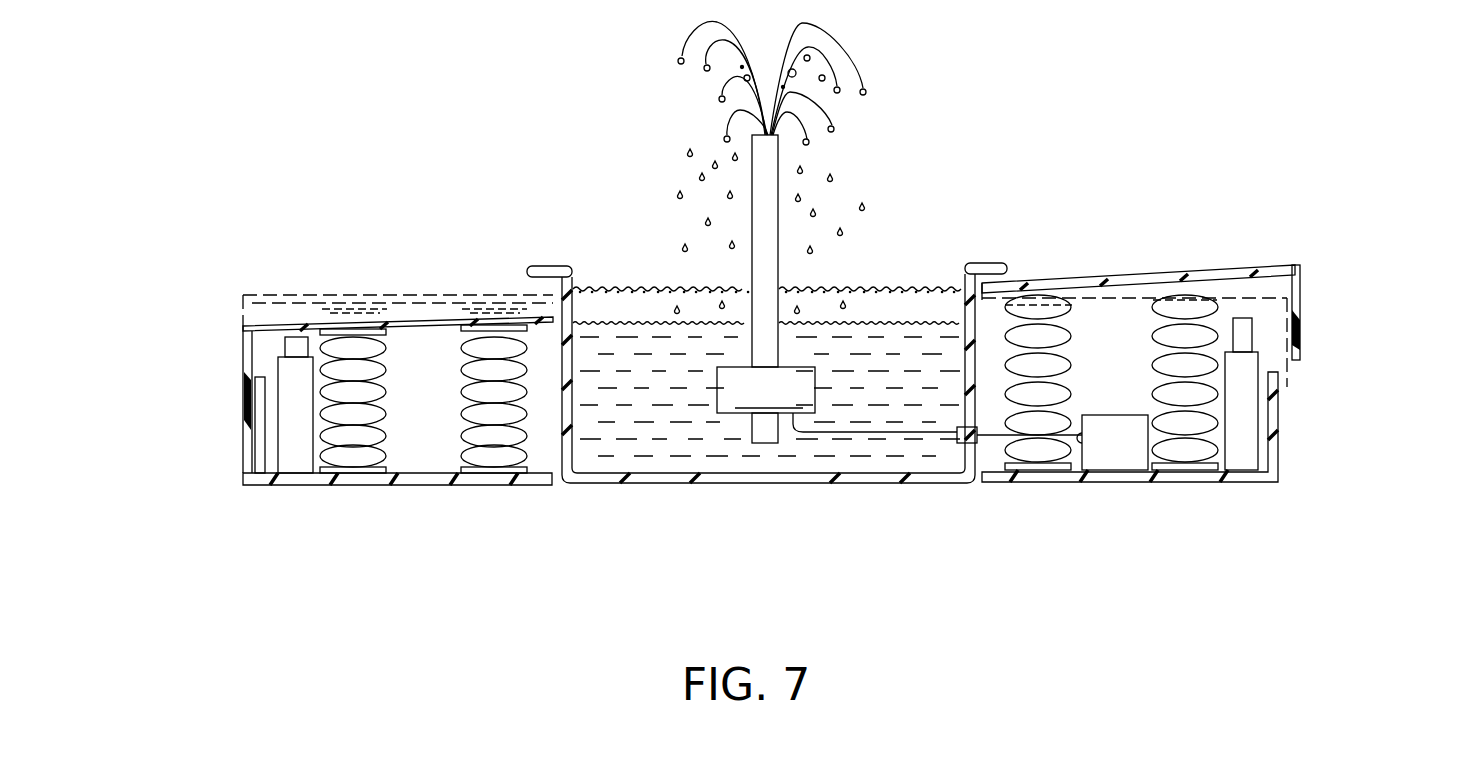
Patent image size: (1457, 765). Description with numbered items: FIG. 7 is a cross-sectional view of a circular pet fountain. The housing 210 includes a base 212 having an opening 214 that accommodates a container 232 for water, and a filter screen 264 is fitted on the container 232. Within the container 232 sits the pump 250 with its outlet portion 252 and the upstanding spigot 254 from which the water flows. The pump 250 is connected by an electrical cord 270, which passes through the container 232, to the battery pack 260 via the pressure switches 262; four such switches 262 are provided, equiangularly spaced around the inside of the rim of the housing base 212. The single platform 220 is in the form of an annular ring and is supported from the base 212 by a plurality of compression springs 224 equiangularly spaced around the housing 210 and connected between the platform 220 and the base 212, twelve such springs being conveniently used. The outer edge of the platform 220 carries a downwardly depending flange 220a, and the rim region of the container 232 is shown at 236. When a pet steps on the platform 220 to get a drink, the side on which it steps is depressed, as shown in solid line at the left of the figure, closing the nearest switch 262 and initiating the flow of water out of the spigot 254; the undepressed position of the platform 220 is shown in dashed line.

The housing 210 is at (232, 499).
The base 212 is at (425, 485).
The opening 214 is at (555, 485).
The platform 220 is at (438, 322).
The downwardly depending flange 220a is at (240, 371).
The compression springs 224 is at (352, 458).
The container 232 is at (713, 484).
The basin lip 236 is at (548, 268).
The pump 250 is at (766, 390).
The pump outlet 252 is at (773, 443).
The spigot 254 is at (780, 157).
The battery pack 260 is at (1103, 457).
The pressure switches 262 is at (293, 462).
The filter screen 264 is at (872, 290).
The electrical cord 270 is at (907, 435).